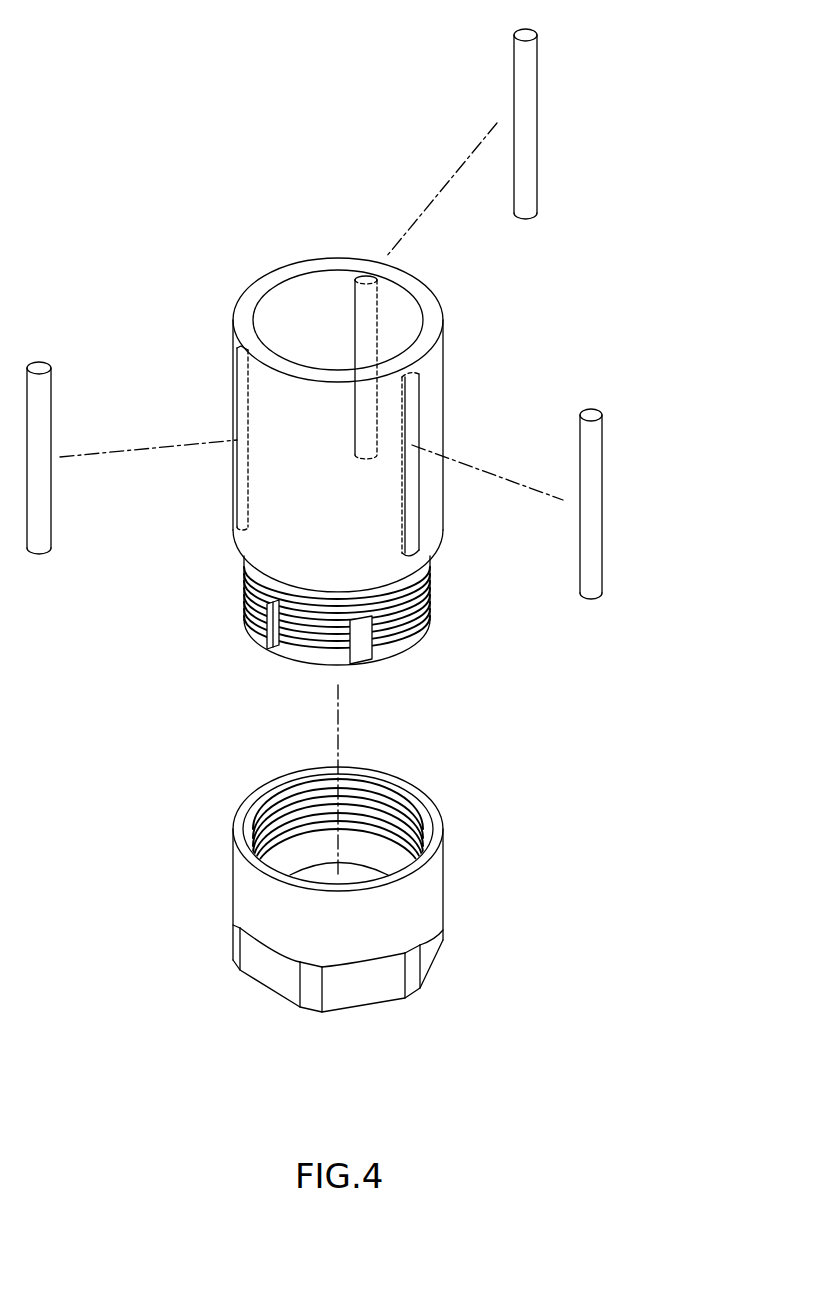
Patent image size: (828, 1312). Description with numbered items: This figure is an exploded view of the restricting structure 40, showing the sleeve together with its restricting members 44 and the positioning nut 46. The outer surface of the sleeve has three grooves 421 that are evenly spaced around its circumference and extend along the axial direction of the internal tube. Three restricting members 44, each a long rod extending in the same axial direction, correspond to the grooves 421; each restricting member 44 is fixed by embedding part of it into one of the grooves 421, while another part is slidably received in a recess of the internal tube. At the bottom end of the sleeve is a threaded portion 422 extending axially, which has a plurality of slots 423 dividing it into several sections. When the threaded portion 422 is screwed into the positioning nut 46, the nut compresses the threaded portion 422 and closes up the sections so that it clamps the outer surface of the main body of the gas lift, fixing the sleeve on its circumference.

The restricting structure 40 is at (593, 200).
The groove 421 is at (352, 302).
The threaded portion 422 is at (300, 628).
The slot 423 is at (257, 623).
The restricting member 44 is at (518, 53).
The positioning nut 46 is at (437, 878).